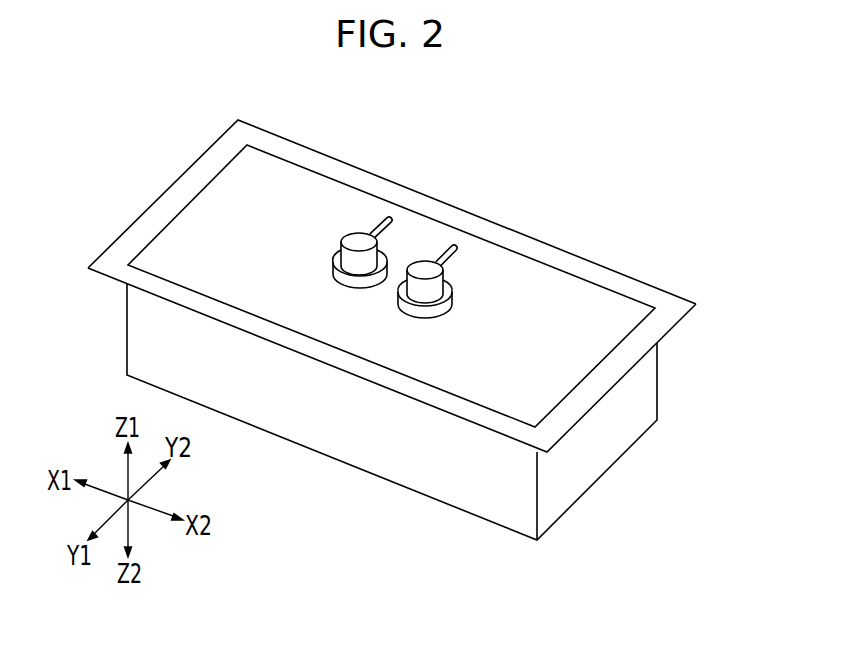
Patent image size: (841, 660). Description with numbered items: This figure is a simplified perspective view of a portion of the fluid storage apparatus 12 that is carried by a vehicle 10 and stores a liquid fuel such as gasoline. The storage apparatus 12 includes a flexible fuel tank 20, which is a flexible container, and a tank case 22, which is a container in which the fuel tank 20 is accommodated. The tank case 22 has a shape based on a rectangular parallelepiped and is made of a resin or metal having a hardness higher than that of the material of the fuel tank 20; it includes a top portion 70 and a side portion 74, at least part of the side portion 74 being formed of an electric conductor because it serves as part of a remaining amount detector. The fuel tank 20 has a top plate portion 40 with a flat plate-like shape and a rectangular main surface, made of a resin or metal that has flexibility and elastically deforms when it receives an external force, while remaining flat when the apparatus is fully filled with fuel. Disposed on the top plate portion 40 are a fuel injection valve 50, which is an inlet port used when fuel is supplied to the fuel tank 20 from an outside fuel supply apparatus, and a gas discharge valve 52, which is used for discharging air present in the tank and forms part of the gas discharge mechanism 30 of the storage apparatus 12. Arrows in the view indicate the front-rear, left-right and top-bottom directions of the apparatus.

The vehicle 10 is at (347, 117).
The fluid storage apparatus 12 is at (404, 162).
The flexible fuel tank 20 is at (600, 289).
The tank case 22 is at (448, 553).
The gas discharge mechanism 30 is at (304, 270).
The top plate portion 40 is at (560, 286).
The fuel injection valve 50 is at (437, 307).
The gas discharge valve 52 is at (352, 240).
The top portion 70 is at (393, 384).
The side portion 74 is at (445, 488).